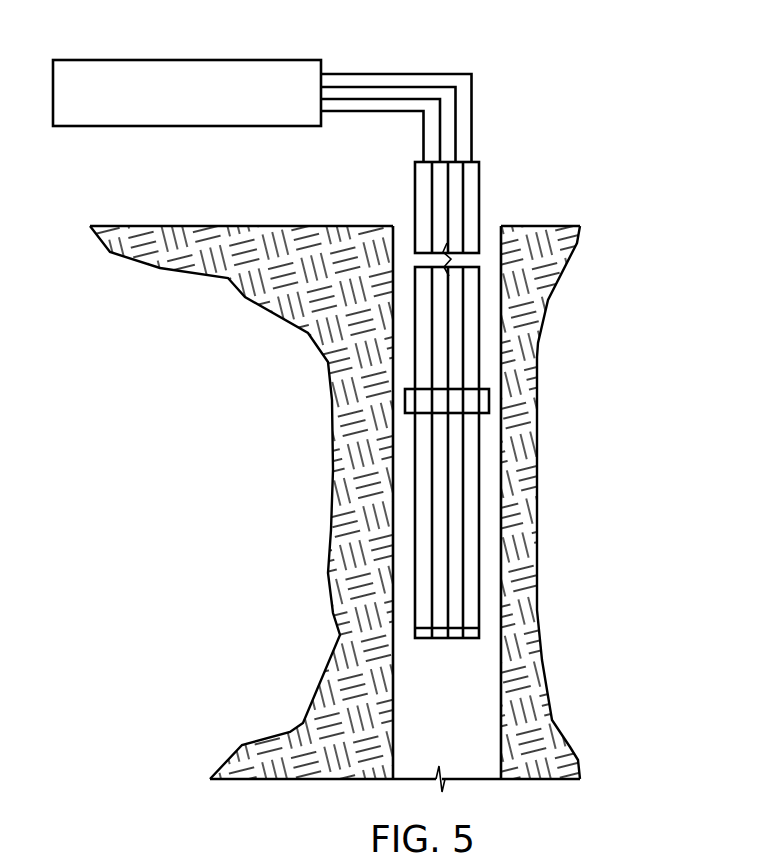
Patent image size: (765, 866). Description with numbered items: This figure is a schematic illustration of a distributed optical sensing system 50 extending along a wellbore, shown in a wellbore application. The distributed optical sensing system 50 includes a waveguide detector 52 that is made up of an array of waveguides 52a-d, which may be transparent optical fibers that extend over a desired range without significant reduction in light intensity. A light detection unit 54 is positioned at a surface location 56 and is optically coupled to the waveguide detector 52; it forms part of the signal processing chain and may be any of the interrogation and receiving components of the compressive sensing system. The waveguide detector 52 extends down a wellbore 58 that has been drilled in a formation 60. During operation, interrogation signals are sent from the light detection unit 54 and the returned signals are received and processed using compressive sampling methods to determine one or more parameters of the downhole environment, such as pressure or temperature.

The distributed optical sensing system 50 is at (566, 54).
The waveguide detector 52 is at (480, 200).
The array of waveguides 52a-d is at (423, 552).
The light detection unit 54 is at (140, 60).
The surface location 56 is at (167, 225).
The wellbore 58 is at (490, 329).
The formation 60 is at (352, 294).